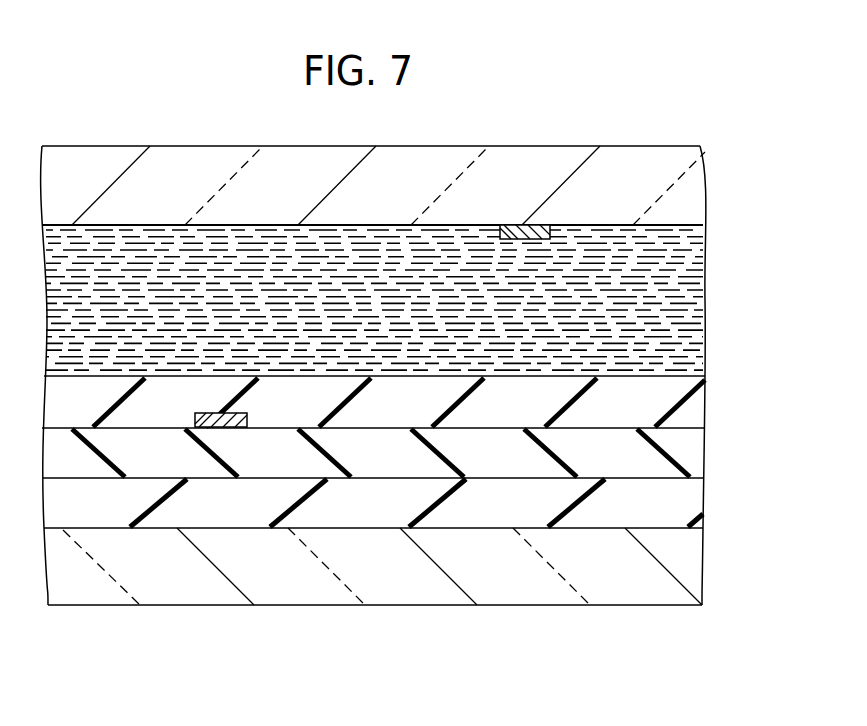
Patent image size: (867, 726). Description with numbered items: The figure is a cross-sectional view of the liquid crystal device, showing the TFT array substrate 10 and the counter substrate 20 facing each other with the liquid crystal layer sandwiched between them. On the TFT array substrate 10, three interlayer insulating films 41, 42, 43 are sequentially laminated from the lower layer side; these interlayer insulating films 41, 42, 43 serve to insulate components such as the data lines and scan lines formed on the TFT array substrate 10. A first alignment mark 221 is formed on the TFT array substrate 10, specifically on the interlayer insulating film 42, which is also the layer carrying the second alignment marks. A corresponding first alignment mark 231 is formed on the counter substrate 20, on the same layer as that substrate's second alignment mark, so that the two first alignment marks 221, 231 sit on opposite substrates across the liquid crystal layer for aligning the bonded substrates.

The TFT array substrate 10 is at (690, 574).
The counter substrate 20 is at (695, 201).
The interlayer insulating film 41 is at (695, 506).
The interlayer insulating film 42 is at (695, 453).
The interlayer insulating film 43 is at (695, 407).
The first alignment mark 221 is at (221, 414).
The first alignment mark 231 is at (533, 238).